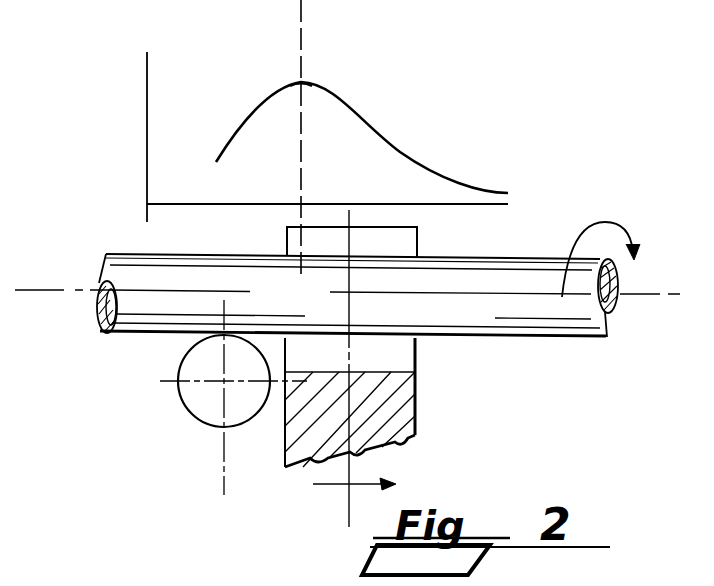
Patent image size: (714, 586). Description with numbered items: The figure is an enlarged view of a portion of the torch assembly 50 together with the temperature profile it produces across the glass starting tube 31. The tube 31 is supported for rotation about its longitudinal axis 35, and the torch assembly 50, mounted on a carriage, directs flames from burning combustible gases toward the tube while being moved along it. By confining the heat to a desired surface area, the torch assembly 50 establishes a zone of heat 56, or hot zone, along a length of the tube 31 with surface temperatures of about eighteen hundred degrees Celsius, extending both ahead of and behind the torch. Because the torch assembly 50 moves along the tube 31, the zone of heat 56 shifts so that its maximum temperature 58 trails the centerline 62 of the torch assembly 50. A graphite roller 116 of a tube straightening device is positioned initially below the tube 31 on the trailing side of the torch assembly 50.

The glass starting tube 31 is at (519, 272).
The longitudinal axis 35 is at (45, 290).
The torch assembly 50 is at (418, 406).
The zone of heat 56 is at (416, 157).
The maximum temperature 58 is at (310, 82).
The centerline 62 is at (345, 516).
The roller 116 is at (198, 423).